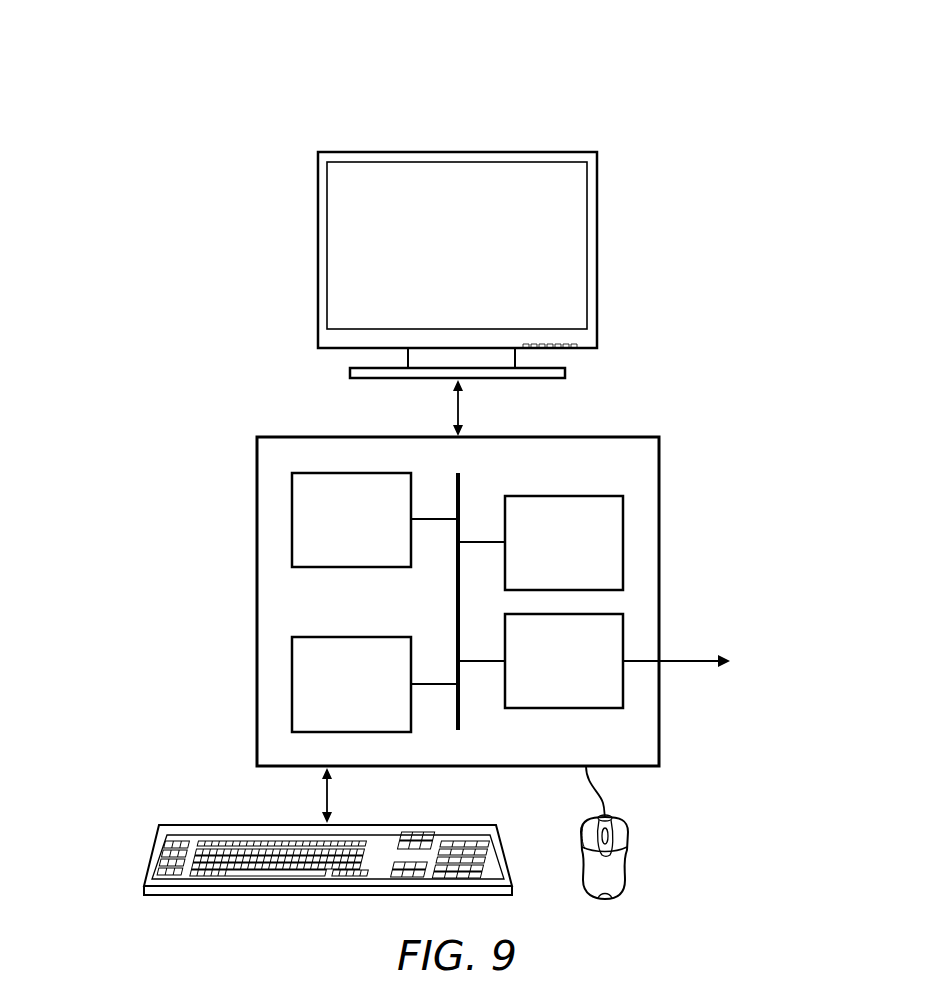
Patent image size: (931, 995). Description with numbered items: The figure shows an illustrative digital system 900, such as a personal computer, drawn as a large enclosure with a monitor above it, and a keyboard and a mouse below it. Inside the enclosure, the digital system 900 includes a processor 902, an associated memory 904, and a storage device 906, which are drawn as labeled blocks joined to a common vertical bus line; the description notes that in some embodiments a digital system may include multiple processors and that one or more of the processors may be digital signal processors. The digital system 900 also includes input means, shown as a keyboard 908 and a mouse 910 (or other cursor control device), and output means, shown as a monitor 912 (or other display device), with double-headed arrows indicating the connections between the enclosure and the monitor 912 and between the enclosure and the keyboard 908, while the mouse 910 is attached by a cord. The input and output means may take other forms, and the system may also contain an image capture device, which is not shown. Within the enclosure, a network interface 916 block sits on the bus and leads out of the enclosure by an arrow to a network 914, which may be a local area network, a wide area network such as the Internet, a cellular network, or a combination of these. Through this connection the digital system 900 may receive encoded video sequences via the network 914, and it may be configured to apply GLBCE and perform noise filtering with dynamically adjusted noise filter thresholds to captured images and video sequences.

The digital system 900 is at (604, 72).
The processor 902 is at (584, 558).
The memory 904 is at (372, 533).
The storage device 906 is at (372, 698).
The keyboard 908 is at (150, 853).
The mouse 910 is at (627, 860).
The monitor 912 is at (439, 151).
The network 914 is at (693, 664).
The network interface 916 is at (584, 693).